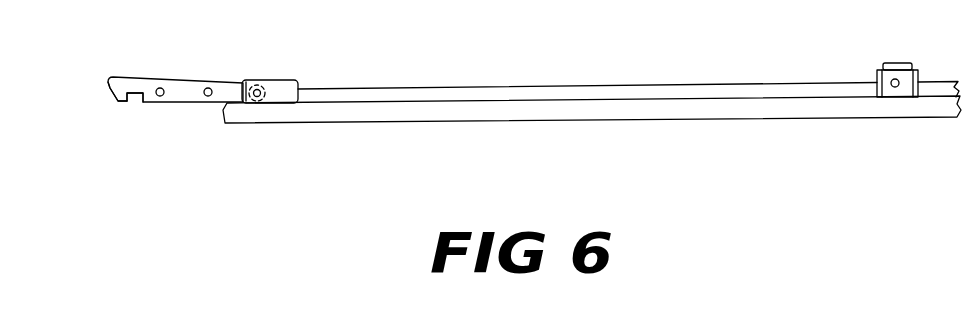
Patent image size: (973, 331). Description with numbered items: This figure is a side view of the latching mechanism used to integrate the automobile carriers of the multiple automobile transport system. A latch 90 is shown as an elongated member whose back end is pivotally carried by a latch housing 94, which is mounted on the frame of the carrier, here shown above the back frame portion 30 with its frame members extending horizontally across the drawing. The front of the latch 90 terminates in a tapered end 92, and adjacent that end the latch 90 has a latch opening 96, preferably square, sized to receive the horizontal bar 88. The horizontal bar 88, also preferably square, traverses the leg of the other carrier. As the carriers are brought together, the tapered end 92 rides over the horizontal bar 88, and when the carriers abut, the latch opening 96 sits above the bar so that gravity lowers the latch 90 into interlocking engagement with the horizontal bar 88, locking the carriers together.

The back frame portion 30 is at (540, 122).
The horizontal bar 88 is at (897, 62).
The latch 90 is at (177, 74).
The tapered end 92 is at (111, 97).
The latch housing 94 is at (267, 80).
The latch opening 96 is at (136, 101).